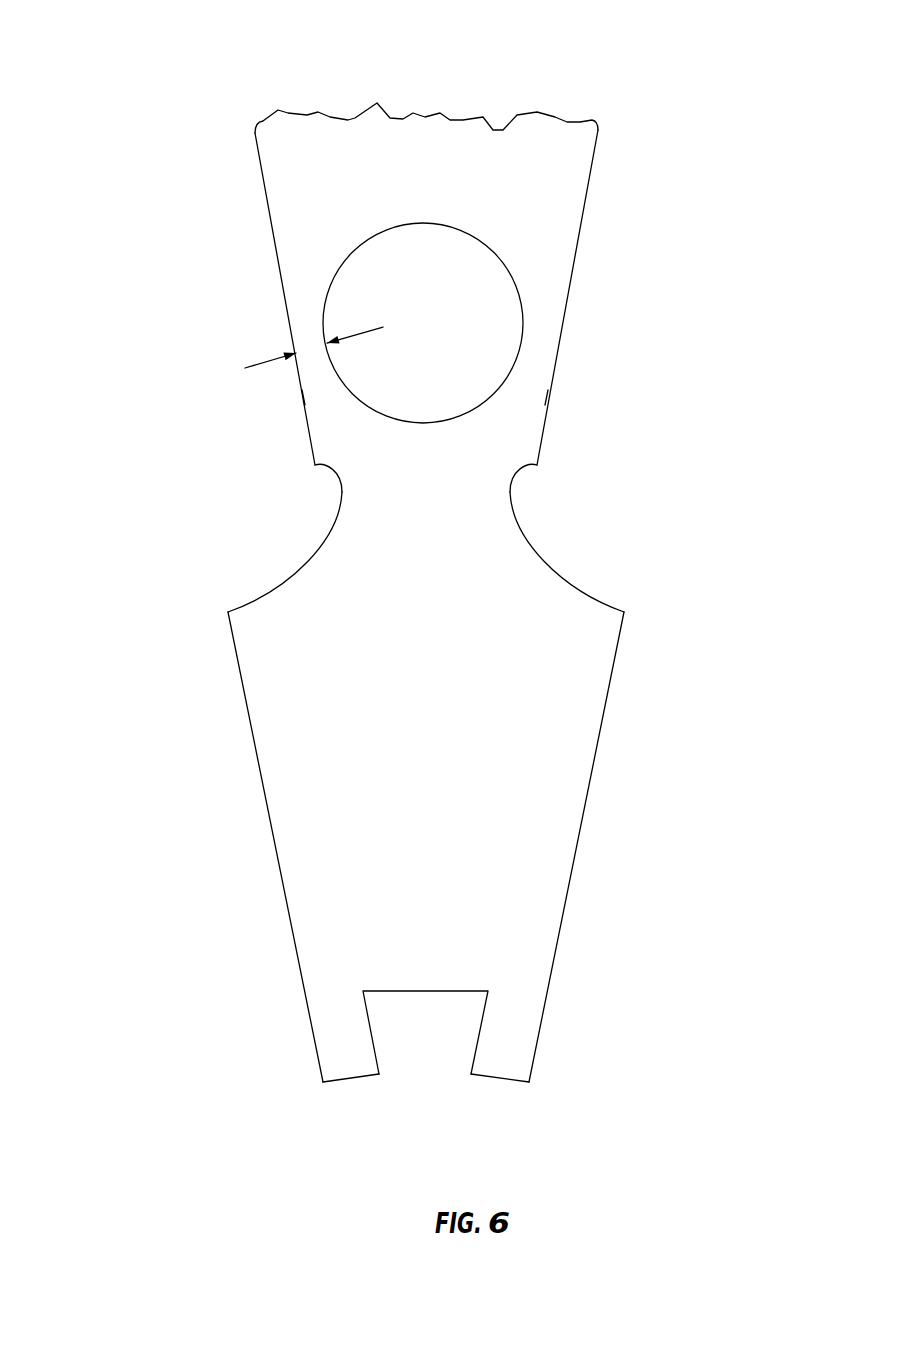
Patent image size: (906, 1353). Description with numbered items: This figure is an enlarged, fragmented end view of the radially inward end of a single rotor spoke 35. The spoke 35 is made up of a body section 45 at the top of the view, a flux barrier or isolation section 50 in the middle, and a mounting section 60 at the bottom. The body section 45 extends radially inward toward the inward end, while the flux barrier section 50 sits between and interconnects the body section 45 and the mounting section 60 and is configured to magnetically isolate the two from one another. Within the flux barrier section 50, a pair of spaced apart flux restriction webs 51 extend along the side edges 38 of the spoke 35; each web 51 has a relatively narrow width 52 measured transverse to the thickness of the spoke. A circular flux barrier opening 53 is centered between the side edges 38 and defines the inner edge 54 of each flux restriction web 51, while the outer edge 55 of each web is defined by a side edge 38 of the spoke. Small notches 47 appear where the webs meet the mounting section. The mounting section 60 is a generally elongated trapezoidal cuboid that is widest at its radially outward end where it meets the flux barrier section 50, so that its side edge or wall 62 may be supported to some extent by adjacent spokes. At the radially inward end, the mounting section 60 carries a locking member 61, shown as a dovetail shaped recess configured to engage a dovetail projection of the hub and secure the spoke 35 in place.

The spoke 35 is at (133, 122).
The body section 45 is at (553, 130).
The flux barrier section 50 is at (638, 337).
The flux restriction web 51 is at (300, 312).
The width 52 is at (268, 362).
The flux barrier opening 53 is at (380, 230).
The inner edge 54 is at (327, 357).
The outer edge 55 is at (307, 373).
The side edge 38 is at (305, 392).
The notch 47 is at (317, 463).
The mounting section 60 is at (643, 825).
The locking member 61 is at (375, 1037).
The side edge or wall 62 is at (293, 945).